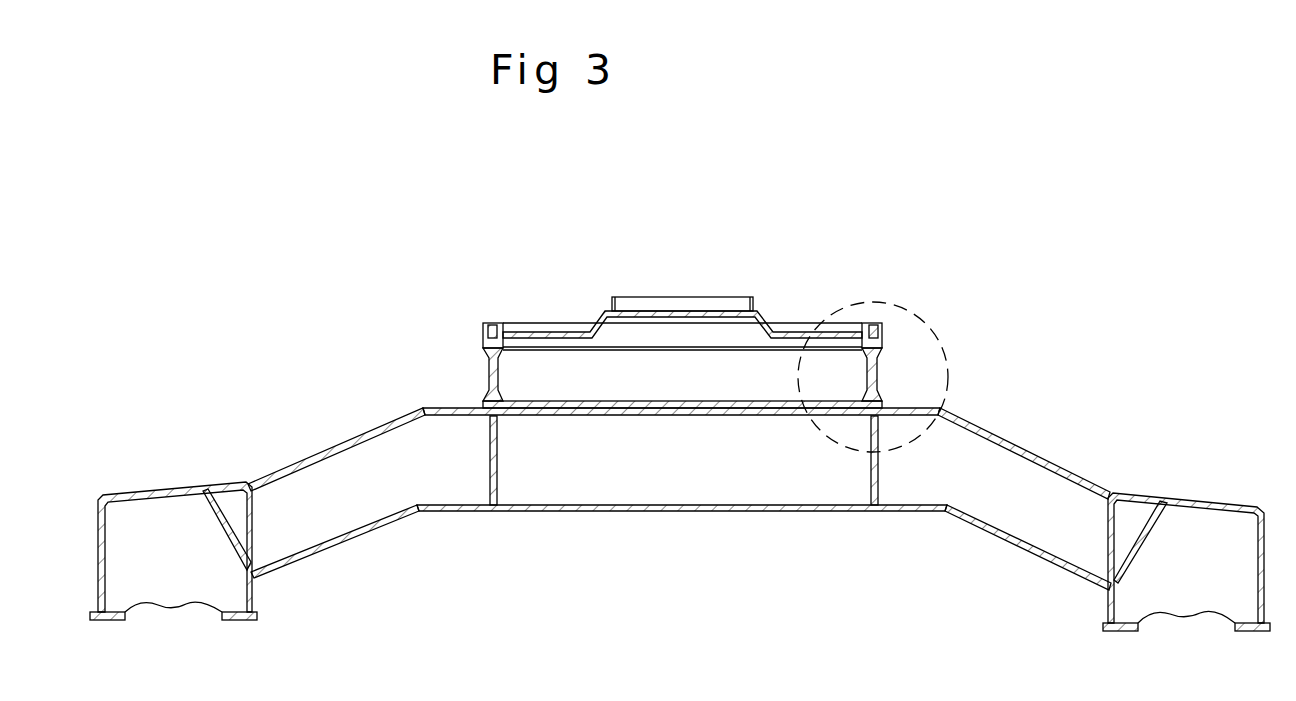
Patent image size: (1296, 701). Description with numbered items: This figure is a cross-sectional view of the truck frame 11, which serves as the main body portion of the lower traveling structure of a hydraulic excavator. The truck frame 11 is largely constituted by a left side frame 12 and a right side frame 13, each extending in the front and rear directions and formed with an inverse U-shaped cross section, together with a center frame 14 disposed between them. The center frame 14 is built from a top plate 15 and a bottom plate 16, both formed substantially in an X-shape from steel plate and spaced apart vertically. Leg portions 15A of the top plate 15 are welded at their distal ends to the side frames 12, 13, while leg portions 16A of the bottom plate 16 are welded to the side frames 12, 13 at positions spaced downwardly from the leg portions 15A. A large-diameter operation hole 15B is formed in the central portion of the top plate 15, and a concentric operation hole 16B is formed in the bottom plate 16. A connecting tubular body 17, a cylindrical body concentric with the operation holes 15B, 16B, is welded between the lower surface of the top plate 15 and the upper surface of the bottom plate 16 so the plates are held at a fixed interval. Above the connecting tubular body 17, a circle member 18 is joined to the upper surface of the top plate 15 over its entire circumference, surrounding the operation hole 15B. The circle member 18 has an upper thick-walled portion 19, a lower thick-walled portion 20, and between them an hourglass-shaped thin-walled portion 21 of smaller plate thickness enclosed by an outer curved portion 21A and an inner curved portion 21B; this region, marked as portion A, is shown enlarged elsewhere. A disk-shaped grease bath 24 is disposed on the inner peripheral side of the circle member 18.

The truck frame 11 is at (654, 274).
The left side frame 12 is at (178, 481).
The right side frame 13 is at (1205, 500).
The center frame 14 is at (679, 482).
The top plate 15 is at (679, 459).
The leg portion 15A is at (320, 452).
The operation hole 15B is at (602, 416).
The bottom plate 16 is at (681, 565).
The leg portion 16A is at (346, 537).
The operation hole 16B is at (723, 513).
The connecting tubular body 17 is at (497, 462).
The circle member 18 is at (478, 393).
The upper thick-walled portion 19 is at (884, 338).
The lower thick-walled portion 20 is at (880, 420).
The hourglass-shaped thin-walled portion 21 is at (879, 373).
The outer curved portion 21A is at (486, 373).
The inner curved portion 21B is at (499, 375).
The grease bath 24 is at (568, 331).
The portion A is at (872, 300).